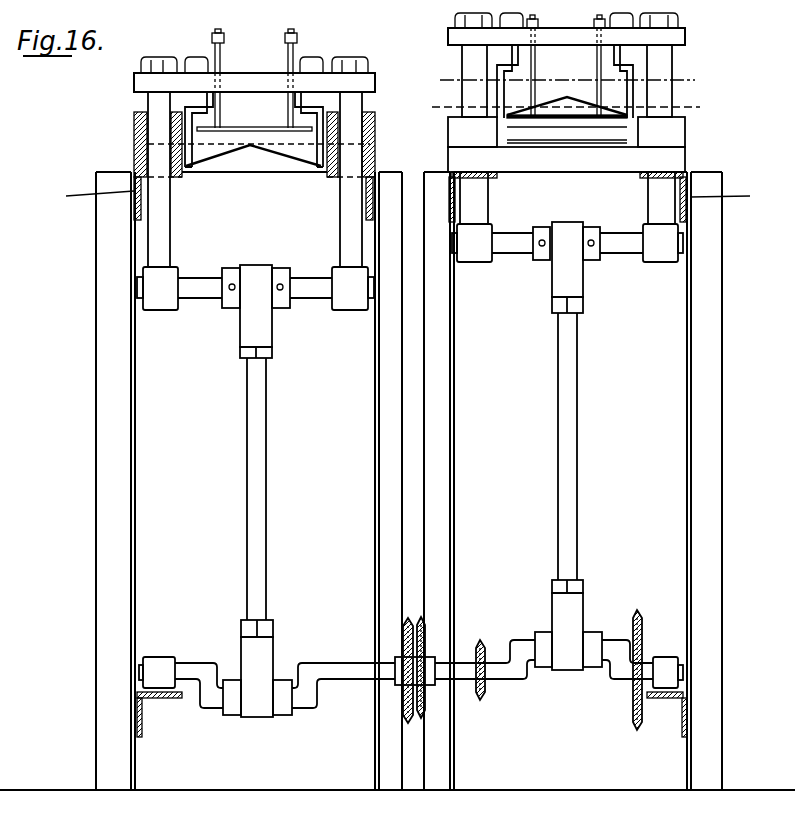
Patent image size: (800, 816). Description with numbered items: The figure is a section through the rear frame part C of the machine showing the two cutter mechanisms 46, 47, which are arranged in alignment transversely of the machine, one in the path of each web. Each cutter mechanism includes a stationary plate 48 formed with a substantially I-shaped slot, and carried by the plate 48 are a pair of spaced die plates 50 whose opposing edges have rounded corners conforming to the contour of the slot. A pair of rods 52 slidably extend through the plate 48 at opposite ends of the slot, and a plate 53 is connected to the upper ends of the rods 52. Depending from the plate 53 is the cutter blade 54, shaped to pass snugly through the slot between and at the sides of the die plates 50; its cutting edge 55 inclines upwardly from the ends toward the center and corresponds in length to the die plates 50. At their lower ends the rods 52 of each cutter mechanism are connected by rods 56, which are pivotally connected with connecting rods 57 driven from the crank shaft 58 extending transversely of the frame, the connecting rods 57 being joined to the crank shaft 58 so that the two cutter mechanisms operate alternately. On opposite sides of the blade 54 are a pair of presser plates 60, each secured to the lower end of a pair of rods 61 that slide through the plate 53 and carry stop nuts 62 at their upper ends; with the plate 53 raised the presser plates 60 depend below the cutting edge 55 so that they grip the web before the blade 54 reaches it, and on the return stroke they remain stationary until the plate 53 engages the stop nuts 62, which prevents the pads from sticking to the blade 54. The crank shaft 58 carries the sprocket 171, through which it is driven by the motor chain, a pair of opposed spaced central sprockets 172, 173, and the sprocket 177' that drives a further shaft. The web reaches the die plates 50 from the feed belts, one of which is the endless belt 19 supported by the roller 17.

The roller 17 is at (566, 80).
The endless belt 19 is at (565, 108).
The cutter mechanism 46 is at (561, 38).
The cutter mechanism 47 is at (251, 73).
The stationary plate 48 is at (517, 163).
The die plates 50 is at (567, 143).
The rods 52 is at (347, 218).
The plate 53 is at (370, 80).
The cutter blade 54 is at (297, 150).
The cutting edge 55 is at (247, 148).
The rods 56 is at (207, 288).
The connecting rods 57 is at (253, 435).
The crank shaft 58 is at (326, 664).
The presser plates 60 is at (249, 127).
The rods 61 is at (213, 50).
The stop nuts 62 is at (597, 70).
The sprocket 171 is at (641, 618).
The sprocket 172 is at (405, 625).
The sprocket 173 is at (427, 630).
The sprocket 177' is at (498, 682).
The rear frame part C is at (405, 196).